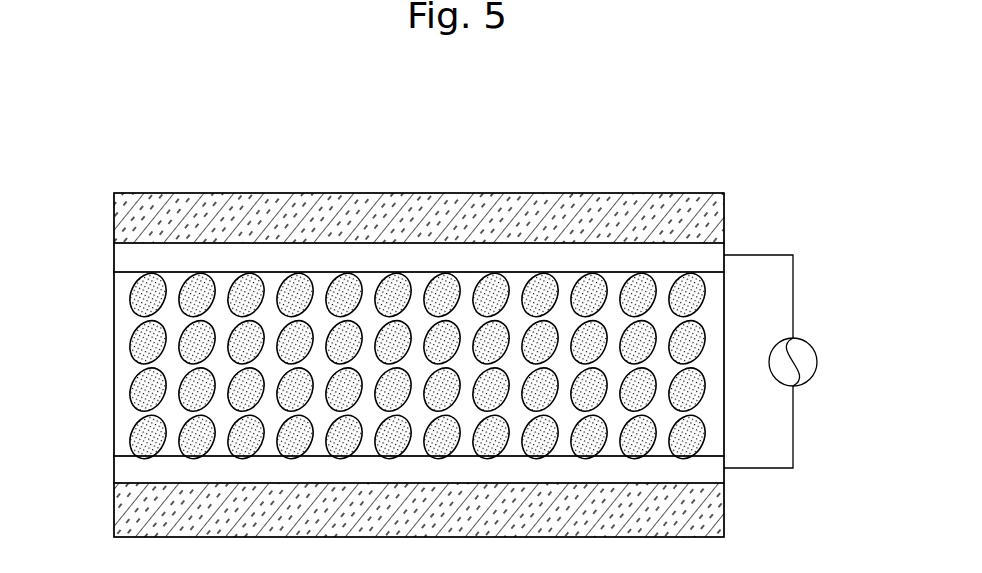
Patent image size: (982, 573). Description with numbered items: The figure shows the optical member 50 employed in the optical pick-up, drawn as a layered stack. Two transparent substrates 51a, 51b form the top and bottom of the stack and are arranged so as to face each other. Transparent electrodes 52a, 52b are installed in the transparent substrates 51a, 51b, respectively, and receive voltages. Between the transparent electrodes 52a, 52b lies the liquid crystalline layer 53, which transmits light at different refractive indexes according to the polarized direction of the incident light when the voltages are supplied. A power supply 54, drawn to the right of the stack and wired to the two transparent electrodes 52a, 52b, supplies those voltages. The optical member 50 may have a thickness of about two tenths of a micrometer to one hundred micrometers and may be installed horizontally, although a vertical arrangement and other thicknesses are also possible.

The optical member 50 is at (755, 197).
The transparent substrate 51a is at (114, 212).
The transparent electrode 52a is at (114, 252).
The liquid crystalline layer 53 is at (114, 364).
The transparent electrode 52b is at (114, 476).
The transparent substrate 51b is at (114, 517).
The power supply 54 is at (818, 358).